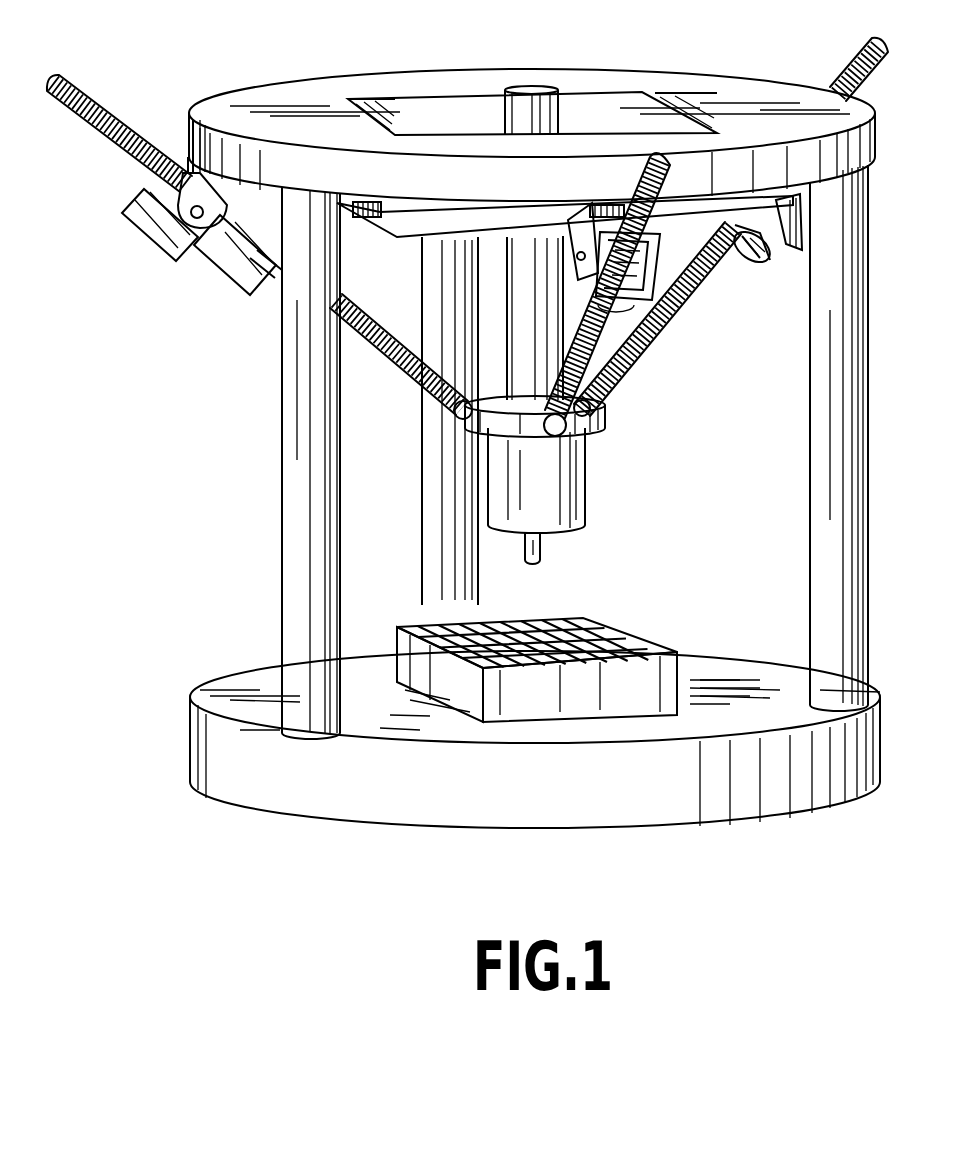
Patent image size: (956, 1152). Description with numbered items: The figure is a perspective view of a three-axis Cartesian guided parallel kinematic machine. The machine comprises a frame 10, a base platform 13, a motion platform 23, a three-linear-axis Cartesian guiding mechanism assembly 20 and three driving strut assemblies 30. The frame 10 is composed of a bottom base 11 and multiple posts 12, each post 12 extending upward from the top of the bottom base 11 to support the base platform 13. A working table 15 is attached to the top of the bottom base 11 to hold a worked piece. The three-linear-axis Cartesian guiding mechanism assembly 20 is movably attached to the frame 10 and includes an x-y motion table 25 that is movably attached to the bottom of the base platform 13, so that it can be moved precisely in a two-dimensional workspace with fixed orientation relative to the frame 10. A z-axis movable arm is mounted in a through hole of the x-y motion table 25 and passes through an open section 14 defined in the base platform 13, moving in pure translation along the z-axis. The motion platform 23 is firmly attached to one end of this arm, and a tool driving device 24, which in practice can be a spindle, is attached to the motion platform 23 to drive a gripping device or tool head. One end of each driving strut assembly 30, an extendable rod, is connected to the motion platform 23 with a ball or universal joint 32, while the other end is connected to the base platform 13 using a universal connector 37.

The frame 10 is at (872, 410).
The bottom base 11 is at (375, 672).
The post 12 is at (295, 577).
The base platform 13 is at (772, 87).
The open section 14 is at (633, 93).
The working table 15 is at (670, 662).
The three-linear-axis Cartesian guiding mechanism assembly 20 is at (480, 287).
The motion platform 23 is at (600, 421).
The tool driving device 24 is at (567, 487).
The x-y motion table 25 is at (774, 250).
The driving strut assembly 30 is at (381, 377).
The ball or universal joint 32 is at (568, 432).
The universal connector 37 is at (212, 197).